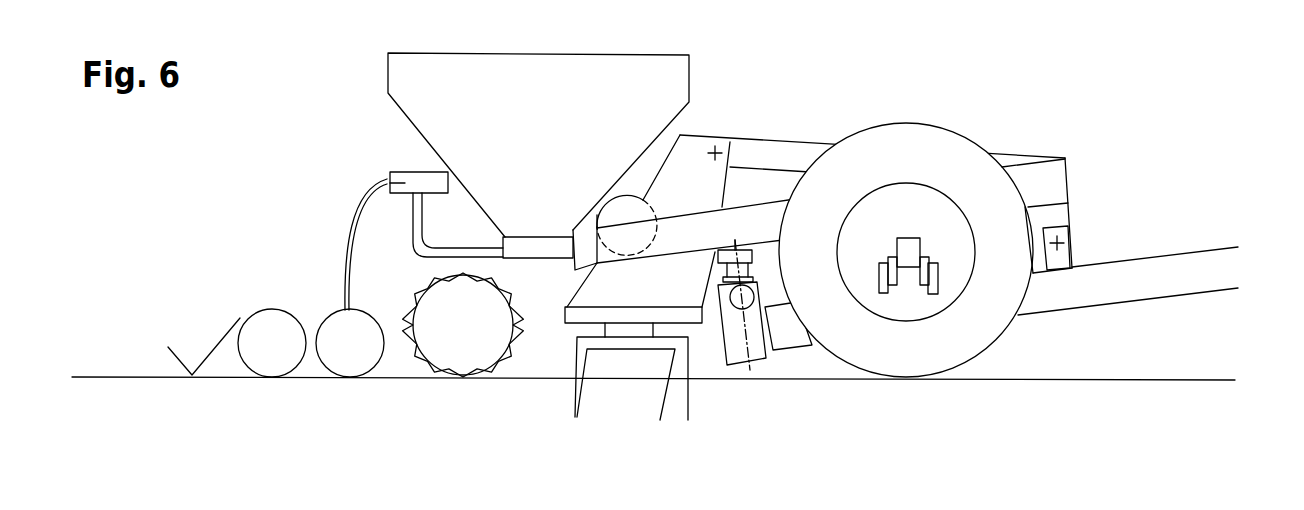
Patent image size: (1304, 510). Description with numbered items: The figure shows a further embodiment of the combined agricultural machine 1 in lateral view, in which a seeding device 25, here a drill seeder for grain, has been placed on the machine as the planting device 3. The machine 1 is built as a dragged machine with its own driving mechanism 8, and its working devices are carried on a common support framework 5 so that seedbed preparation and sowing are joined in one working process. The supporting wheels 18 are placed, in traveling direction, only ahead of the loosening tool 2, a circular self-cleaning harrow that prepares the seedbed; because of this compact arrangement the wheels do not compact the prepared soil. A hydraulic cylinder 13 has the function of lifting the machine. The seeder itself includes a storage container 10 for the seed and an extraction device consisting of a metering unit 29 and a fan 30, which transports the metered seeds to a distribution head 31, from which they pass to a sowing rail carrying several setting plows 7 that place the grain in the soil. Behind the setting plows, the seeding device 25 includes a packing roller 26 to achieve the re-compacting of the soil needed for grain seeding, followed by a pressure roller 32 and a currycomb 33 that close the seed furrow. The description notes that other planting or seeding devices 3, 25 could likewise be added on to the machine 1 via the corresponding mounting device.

The combined agricultural machine 1 is at (1102, 167).
The loosening tool 2 is at (678, 358).
The planting device 3 is at (392, 125).
The common support framework 5 is at (1207, 275).
The setting plow 7 is at (348, 350).
The driving mechanism 8 is at (981, 125).
The storage container 10 is at (635, 95).
The hydraulic cylinder 13 is at (755, 333).
The wheels 18 is at (962, 370).
The seeding device 25 is at (392, 125).
The packing roller 26 is at (458, 343).
The metering unit 29 is at (532, 252).
The fan 30 is at (628, 217).
The distribution head 31 is at (390, 182).
The pressure roller 32 is at (268, 345).
The currycomb 33 is at (210, 353).